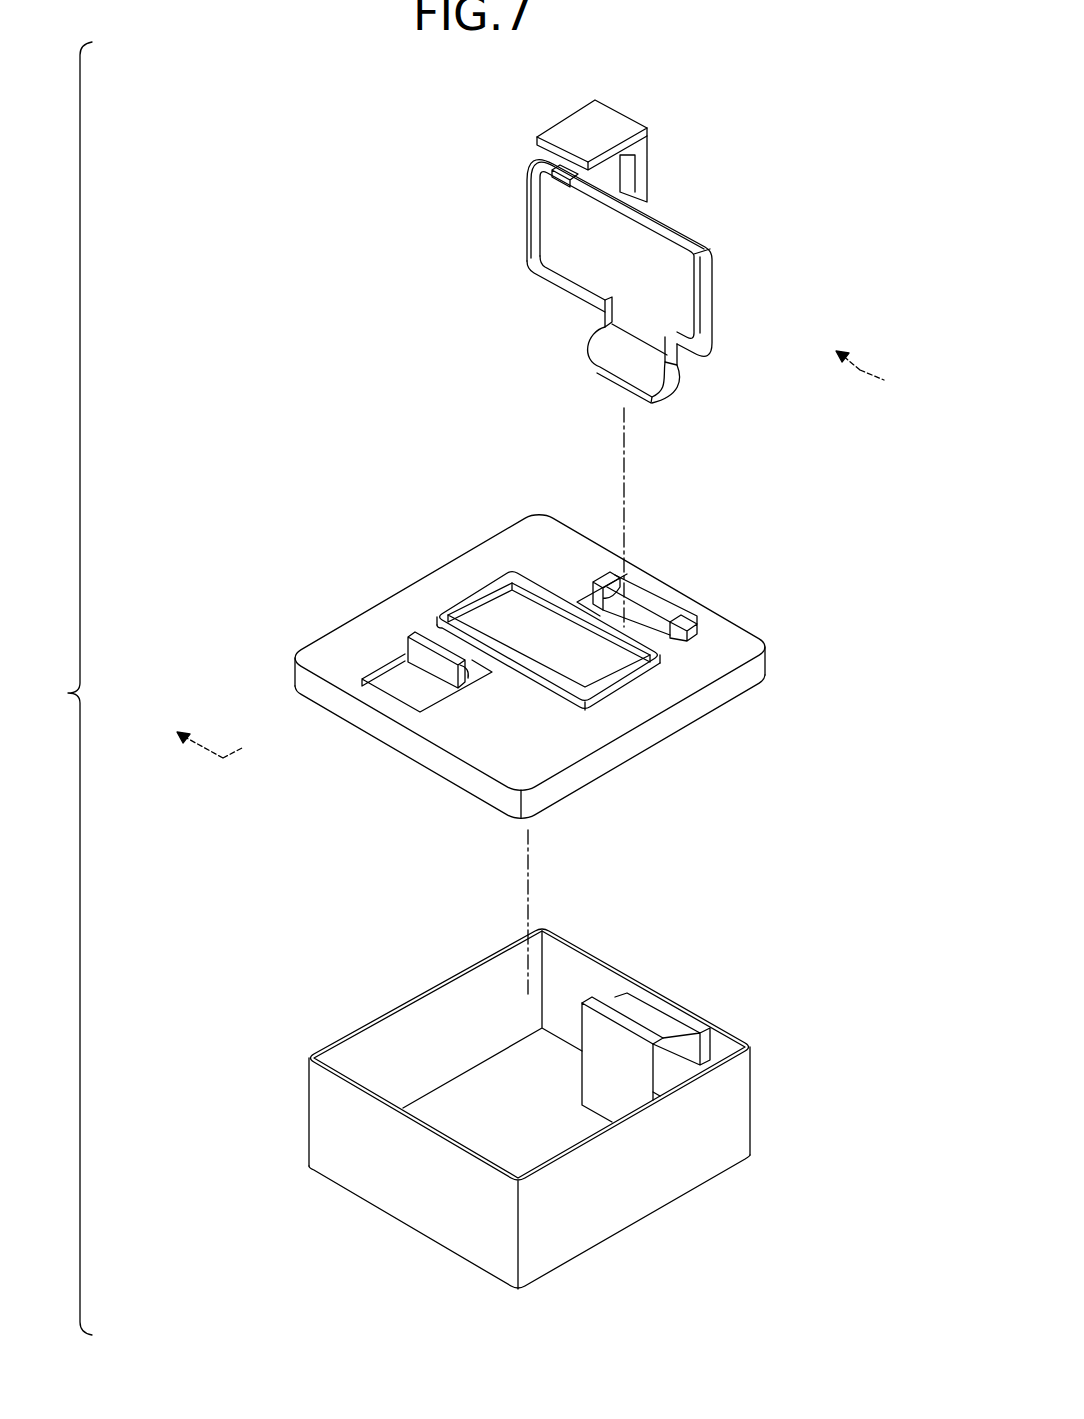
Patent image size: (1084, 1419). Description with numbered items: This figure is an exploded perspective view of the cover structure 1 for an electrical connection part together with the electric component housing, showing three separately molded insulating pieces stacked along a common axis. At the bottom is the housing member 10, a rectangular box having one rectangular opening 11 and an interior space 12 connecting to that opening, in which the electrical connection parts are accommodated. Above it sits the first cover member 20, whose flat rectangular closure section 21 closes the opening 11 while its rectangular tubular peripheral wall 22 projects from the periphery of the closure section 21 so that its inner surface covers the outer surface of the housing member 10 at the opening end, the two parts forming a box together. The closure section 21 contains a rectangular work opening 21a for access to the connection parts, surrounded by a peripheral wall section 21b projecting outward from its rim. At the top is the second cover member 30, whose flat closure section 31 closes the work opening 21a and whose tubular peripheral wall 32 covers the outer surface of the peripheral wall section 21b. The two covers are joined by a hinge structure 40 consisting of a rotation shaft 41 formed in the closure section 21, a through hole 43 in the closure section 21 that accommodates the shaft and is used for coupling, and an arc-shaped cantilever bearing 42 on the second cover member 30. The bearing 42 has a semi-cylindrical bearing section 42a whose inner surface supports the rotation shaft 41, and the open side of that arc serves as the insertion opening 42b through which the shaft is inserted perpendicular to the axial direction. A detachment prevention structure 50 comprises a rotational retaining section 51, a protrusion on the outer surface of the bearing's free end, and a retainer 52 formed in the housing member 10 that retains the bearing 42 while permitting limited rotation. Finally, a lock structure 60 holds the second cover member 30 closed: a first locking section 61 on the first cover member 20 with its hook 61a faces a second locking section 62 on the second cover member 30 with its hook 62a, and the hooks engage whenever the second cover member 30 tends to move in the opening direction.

The cover structure 1 is at (460, 688).
The housing member 10 is at (463, 1088).
The opening 11 is at (380, 1035).
The interior space 12 is at (452, 1053).
The first cover member 20 is at (470, 647).
The closure section 21 is at (330, 648).
The work opening 21a is at (483, 600).
The peripheral wall section 21b is at (443, 610).
The peripheral wall 22 is at (366, 726).
The second cover member 30 is at (618, 261).
The closure section 31 is at (642, 278).
The peripheral wall 32 is at (712, 289).
The hinge structure 40 is at (608, 463).
The rotation shaft 41 is at (650, 613).
The bearing 42 is at (608, 347).
The bearing section 42a is at (597, 352).
The insertion opening 42b is at (673, 373).
The through hole 43 is at (667, 615).
The detachment prevention structure 50 is at (551, 751).
The rotational retaining section 51 is at (616, 380).
The retainer 52 is at (637, 1030).
The lock structure 60 is at (633, 472).
The first locking section 61 is at (614, 738).
The hook 61a is at (478, 672).
The second locking section 62 is at (698, 151).
The hook 62a is at (584, 180).